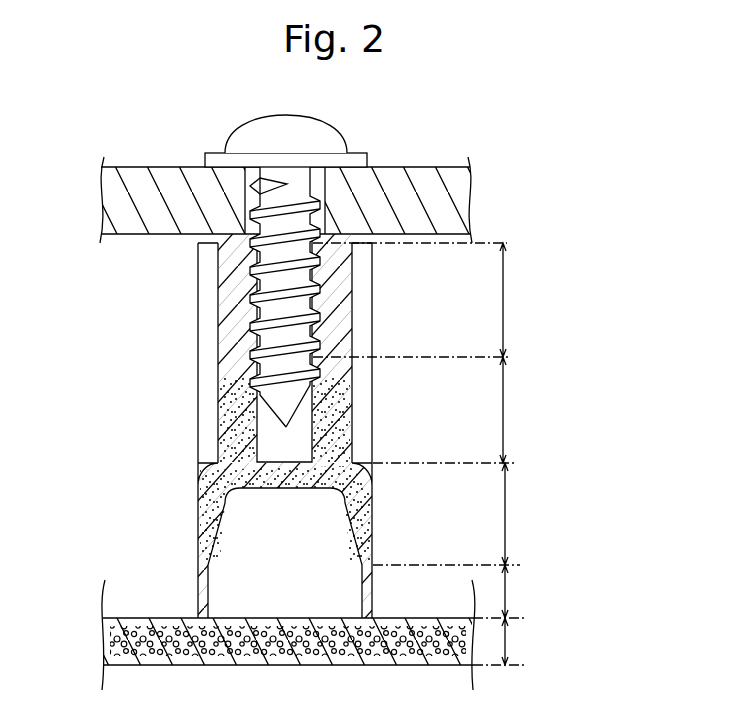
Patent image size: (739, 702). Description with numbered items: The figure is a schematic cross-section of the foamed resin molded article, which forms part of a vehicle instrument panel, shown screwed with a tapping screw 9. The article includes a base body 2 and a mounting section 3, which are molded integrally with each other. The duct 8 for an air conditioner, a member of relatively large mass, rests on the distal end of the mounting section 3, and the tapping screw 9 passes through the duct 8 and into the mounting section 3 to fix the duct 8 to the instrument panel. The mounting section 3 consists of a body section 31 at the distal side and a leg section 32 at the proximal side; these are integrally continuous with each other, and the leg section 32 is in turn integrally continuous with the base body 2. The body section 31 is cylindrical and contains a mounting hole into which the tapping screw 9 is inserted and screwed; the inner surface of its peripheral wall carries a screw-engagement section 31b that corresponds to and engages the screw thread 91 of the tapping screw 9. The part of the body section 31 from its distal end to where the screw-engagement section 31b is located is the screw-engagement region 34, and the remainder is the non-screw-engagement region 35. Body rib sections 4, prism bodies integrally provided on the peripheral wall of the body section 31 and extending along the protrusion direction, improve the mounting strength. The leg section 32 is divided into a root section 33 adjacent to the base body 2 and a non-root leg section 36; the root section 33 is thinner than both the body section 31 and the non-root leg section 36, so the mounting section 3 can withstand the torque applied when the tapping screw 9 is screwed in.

The base body 2 is at (505, 643).
The mounting section 3 is at (345, 405).
The body section 31 is at (345, 327).
The screw-engagement section 31b is at (247, 320).
The leg section 32 is at (205, 498).
The root section 33 is at (505, 592).
The screw-engagement region 34 is at (503, 305).
The non-screw-engagement region 35 is at (503, 412).
The non-root leg section 36 is at (505, 520).
The body rib section 4 is at (208, 433).
The duct 8 is at (418, 170).
The tapping screw 9 is at (230, 257).
The screw thread 91 is at (257, 357).